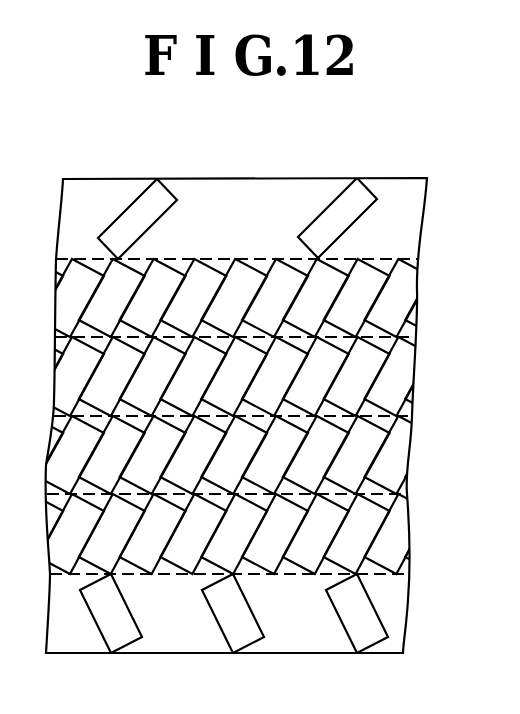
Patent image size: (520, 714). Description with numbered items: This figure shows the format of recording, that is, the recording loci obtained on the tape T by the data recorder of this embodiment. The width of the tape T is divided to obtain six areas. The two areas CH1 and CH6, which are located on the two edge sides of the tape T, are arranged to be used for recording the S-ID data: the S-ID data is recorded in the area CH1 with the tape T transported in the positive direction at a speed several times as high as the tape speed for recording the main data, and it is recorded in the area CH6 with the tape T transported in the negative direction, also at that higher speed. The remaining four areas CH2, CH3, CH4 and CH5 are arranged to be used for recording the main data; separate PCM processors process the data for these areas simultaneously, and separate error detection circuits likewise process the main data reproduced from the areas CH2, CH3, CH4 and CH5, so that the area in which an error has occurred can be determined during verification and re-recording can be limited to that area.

The tape T is at (93, 178).
The area CH1 is at (410, 615).
The area CH2 is at (412, 532).
The area CH3 is at (416, 450).
The area CH4 is at (419, 375).
The area CH5 is at (418, 292).
The area CH6 is at (427, 221).